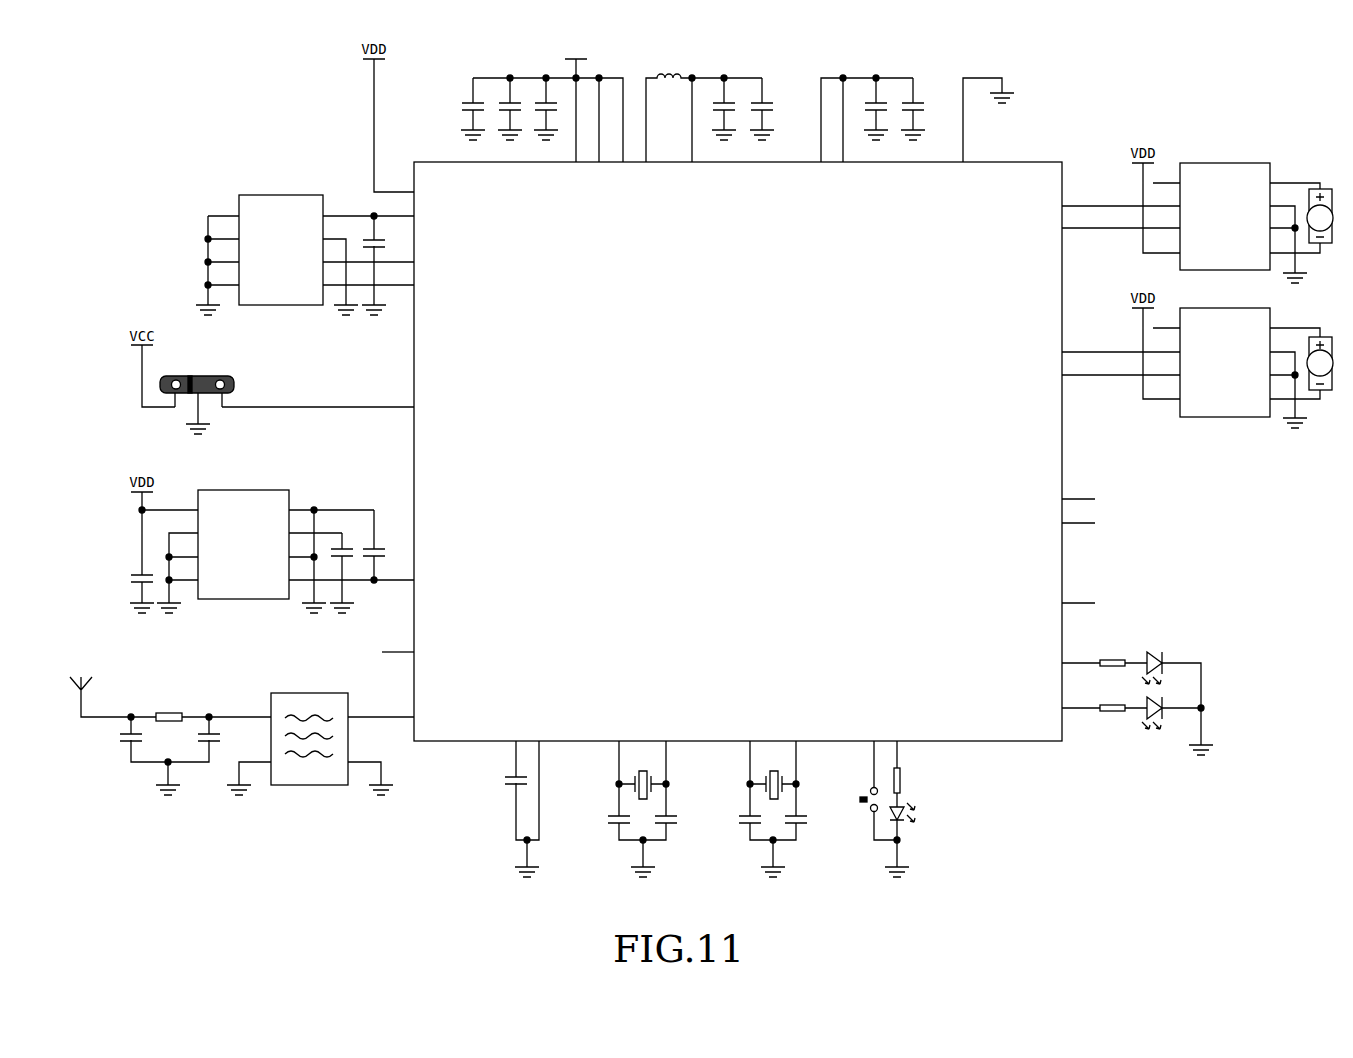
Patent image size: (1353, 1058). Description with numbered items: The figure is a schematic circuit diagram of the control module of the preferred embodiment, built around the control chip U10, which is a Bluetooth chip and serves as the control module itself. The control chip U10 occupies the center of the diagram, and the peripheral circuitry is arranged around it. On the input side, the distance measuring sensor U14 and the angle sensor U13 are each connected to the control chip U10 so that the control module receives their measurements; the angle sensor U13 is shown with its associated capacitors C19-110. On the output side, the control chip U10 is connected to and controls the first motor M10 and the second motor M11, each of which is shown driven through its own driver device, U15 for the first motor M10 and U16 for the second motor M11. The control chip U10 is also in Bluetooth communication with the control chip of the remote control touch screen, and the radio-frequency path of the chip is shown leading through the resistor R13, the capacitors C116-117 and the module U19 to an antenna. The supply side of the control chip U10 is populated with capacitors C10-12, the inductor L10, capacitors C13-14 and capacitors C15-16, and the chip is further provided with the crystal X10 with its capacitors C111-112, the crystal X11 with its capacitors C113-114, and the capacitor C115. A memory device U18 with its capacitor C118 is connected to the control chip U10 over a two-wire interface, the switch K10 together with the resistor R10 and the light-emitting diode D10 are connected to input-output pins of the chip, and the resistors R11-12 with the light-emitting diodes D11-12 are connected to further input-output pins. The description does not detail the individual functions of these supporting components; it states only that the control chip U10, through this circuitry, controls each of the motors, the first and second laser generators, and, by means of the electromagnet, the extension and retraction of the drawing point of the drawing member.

The control chip U10 is at (738, 498).
The battery supply decoupling capacitors C10-12 is at (542, 101).
The SMPS inductor L10 is at (669, 107).
The regulator input capacitors C13-14 is at (731, 107).
The core supply decoupling capacitors C15-16 is at (873, 107).
The AT24C512 EEPROM U18 is at (277, 259).
The EEPROM decoupling capacitor C118 is at (368, 256).
The distance measuring sensor U14 is at (199, 393).
The angle sensor U13 is at (243, 555).
The angle sensor capacitors C19-110 is at (359, 552).
The antenna matching resistor R13 is at (169, 707).
The antenna matching capacitors C116-117 is at (154, 756).
The 24GHz RF filter module U19 is at (310, 748).
The crystal supply capacitor C115 is at (511, 809).
The 16 MHz crystal X10 is at (659, 785).
The 16 MHz crystal load capacitors C111-112 is at (619, 809).
The 32 kHz crystal X11 is at (789, 785).
The 32 kHz crystal load capacitors C113-114 is at (750, 809).
The push-button switch K10 is at (870, 790).
The LED current limiting resistor R10 is at (913, 774).
The indicator LED D10 is at (910, 840).
The PTC918 motor driver U15 is at (1223, 227).
The first motor M10 is at (1302, 226).
The PTC918 motor driver U16 is at (1223, 373).
The second motor M11 is at (1302, 371).
The LED current limiting resistors R11-12 is at (1184, 685).
The indicator LEDs D11-12 is at (1205, 690).